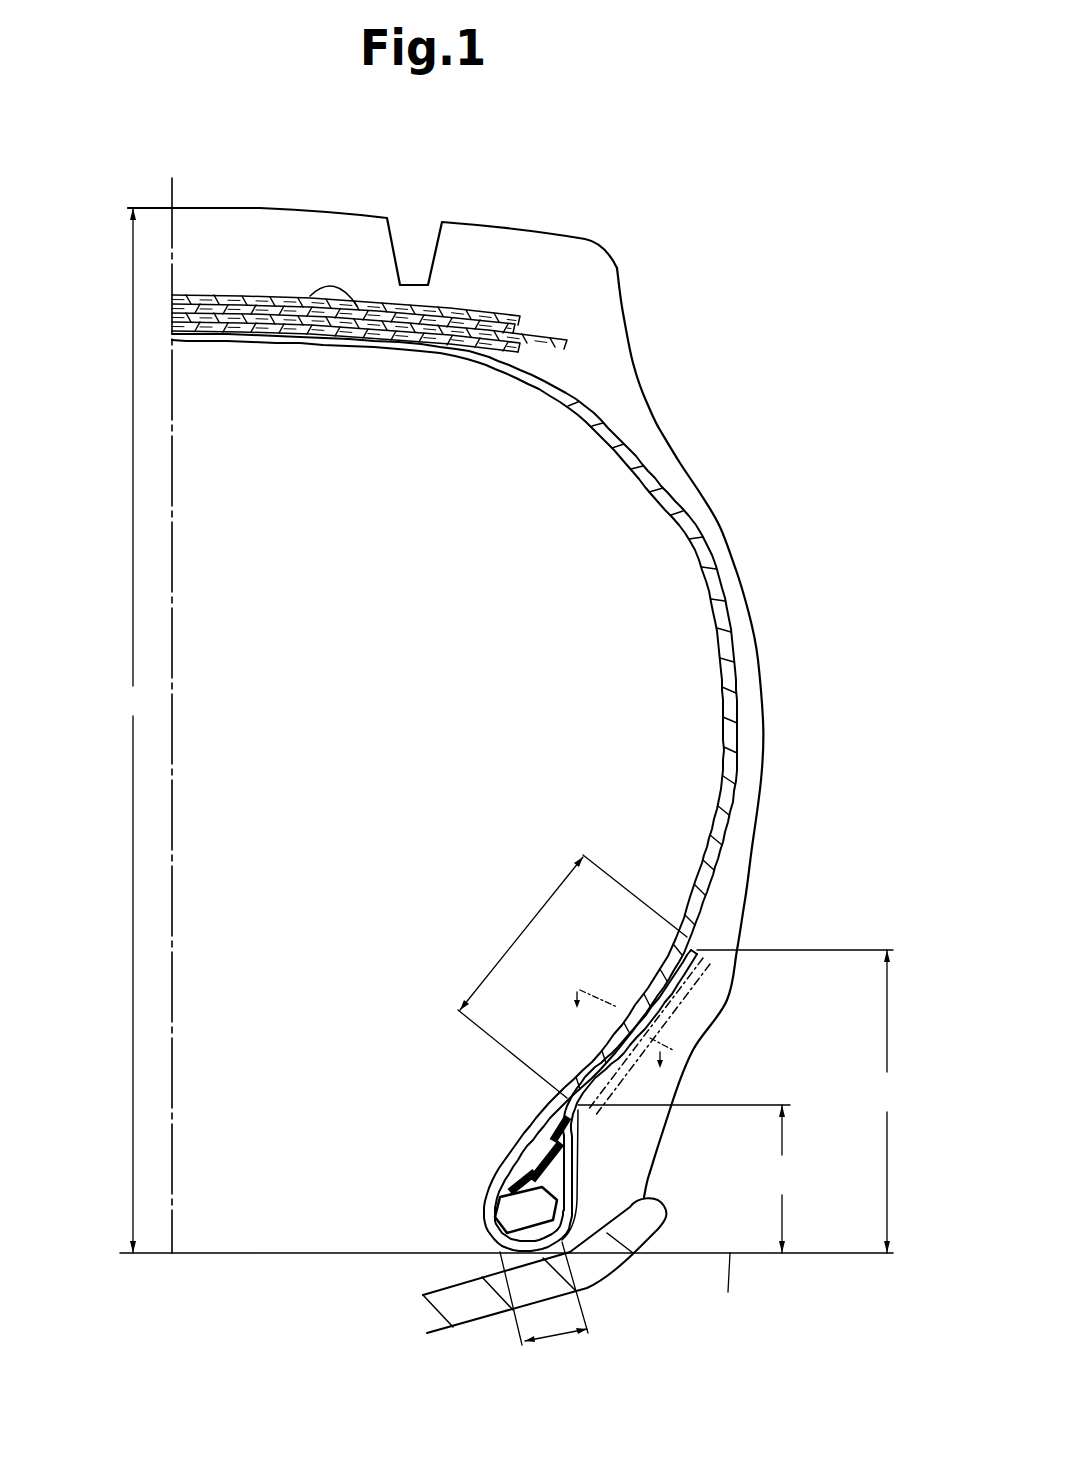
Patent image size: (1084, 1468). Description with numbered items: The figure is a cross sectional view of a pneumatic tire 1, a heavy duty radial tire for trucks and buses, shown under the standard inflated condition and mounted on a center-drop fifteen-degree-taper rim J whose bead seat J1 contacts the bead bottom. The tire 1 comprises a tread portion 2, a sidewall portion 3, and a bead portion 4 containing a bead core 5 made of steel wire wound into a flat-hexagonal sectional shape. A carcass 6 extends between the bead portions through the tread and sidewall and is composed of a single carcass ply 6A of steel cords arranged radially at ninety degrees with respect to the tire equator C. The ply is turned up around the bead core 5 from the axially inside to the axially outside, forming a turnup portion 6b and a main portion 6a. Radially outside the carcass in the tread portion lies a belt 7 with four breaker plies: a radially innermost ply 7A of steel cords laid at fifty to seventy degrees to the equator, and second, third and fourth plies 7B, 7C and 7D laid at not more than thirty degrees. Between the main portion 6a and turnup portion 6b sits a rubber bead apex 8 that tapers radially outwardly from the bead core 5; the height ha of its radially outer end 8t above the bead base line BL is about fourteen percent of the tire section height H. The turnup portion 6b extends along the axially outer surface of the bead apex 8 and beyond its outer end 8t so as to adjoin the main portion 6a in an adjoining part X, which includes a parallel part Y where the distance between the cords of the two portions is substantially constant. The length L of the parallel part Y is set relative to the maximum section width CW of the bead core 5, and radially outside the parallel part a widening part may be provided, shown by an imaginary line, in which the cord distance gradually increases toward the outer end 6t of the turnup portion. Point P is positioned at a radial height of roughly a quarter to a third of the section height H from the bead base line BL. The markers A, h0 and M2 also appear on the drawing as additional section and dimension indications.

The pneumatic tire 1 is at (507, 666).
The tread portion 2 is at (335, 203).
The sidewall portion 3 is at (752, 732).
The bead portion 4 is at (571, 1132).
The bead core 5 is at (505, 1210).
The carcass 6 is at (522, 792).
The carcass ply 6A is at (522, 792).
The carcass ply main portion 6a is at (718, 632).
The carcass ply turnup portion 6b is at (717, 1054).
The outer end of turnup portion 6t is at (699, 950).
The belt 7 is at (369, 382).
The radially innermost belt ply 7A is at (193, 318).
The second belt ply 7B is at (245, 315).
The third belt ply 7C is at (290, 318).
The fourth belt ply 7D is at (195, 428).
The bead apex 8 is at (458, 1111).
The radially outer end of bead apex 8t is at (564, 1107).
The rim J is at (494, 1286).
The bead seat J1 is at (427, 1295).
The bead base line BL is at (506, 1292).
The tire equator C is at (172, 699).
The tire section height H is at (132, 730).
The point P is at (702, 960).
The adjoining part X is at (592, 1120).
The parallel part Y is at (672, 1017).
The section line A- A is at (613, 1024).
The length of parallel part L is at (572, 976).
The maximum section width of bead core CW is at (544, 1293).
The turnup end height h0 is at (891, 1101).
The height of bead apex outer end ha is at (688, 1179).
The maximum width point M2 is at (760, 732).